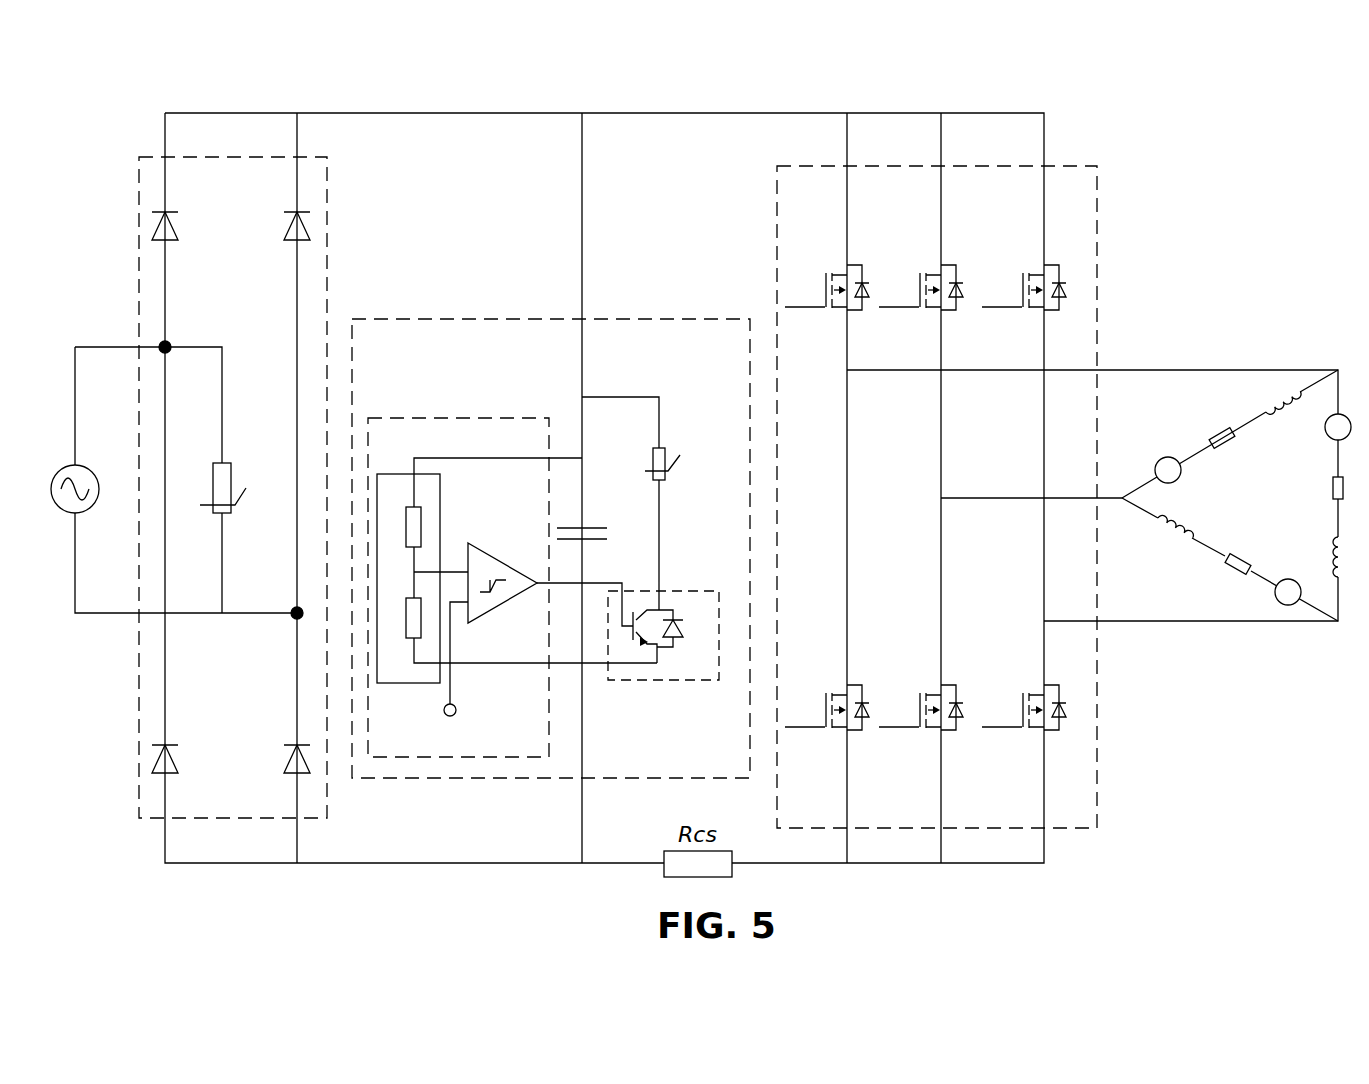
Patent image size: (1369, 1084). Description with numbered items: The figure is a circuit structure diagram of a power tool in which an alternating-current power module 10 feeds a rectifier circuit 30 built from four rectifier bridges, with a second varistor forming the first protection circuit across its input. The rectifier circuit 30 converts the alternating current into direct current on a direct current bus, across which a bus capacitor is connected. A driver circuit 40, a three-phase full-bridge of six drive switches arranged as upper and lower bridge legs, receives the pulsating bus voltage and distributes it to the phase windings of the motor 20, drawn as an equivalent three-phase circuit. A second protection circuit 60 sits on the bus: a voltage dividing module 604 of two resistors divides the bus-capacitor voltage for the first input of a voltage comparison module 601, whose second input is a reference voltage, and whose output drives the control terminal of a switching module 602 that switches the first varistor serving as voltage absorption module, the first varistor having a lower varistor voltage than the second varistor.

The power module 10 is at (88, 466).
The motor 20 is at (1268, 362).
The rectifier circuit 30 is at (139, 156).
The driver circuit 40 is at (1065, 165).
The second protection circuit 60 is at (551, 514).
The voltage comparison module 601 is at (465, 418).
The switching module 602 is at (667, 590).
The voltage dividing module 604 is at (440, 517).